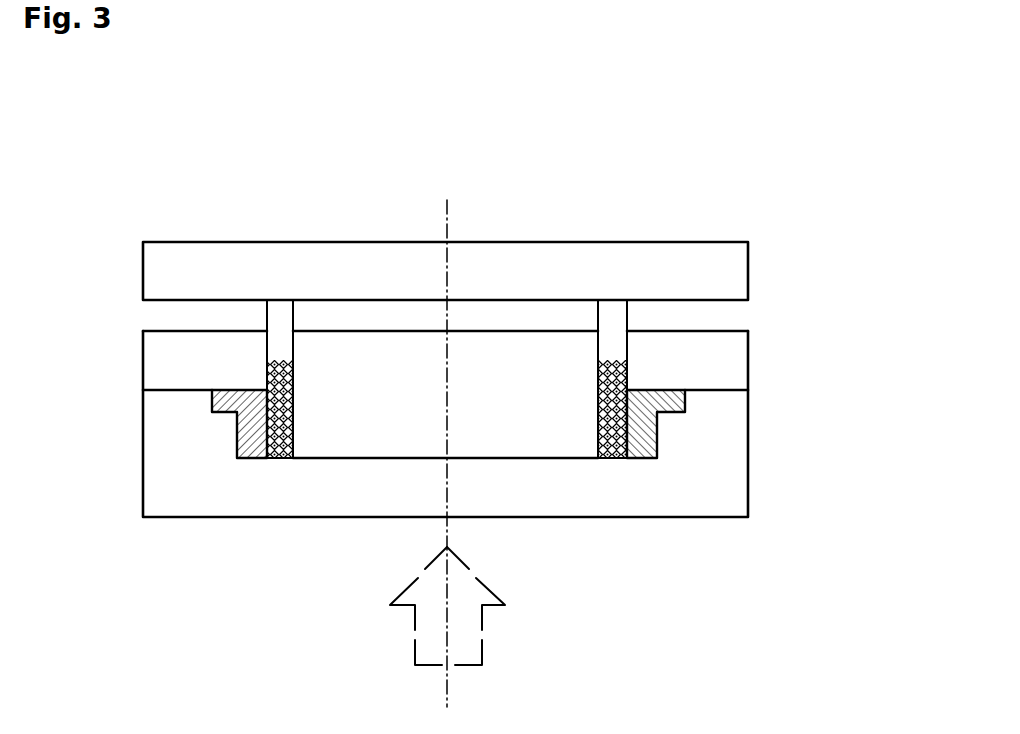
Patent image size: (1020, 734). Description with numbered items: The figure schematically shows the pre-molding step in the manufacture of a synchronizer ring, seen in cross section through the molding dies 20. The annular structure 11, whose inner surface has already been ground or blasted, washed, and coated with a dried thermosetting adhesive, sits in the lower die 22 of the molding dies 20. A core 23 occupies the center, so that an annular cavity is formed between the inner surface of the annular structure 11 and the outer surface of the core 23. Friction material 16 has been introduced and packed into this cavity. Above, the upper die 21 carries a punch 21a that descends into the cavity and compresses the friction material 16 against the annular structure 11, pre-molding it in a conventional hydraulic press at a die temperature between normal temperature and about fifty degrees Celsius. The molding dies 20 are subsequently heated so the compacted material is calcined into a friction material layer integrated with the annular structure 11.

The annular structure 11 is at (233, 390).
The friction material 16 is at (215, 575).
The molding dies 20 is at (516, 379).
The upper die 21 is at (755, 135).
The punch 21a is at (306, 319).
The lower die 22 is at (782, 603).
The core 23 is at (471, 554).